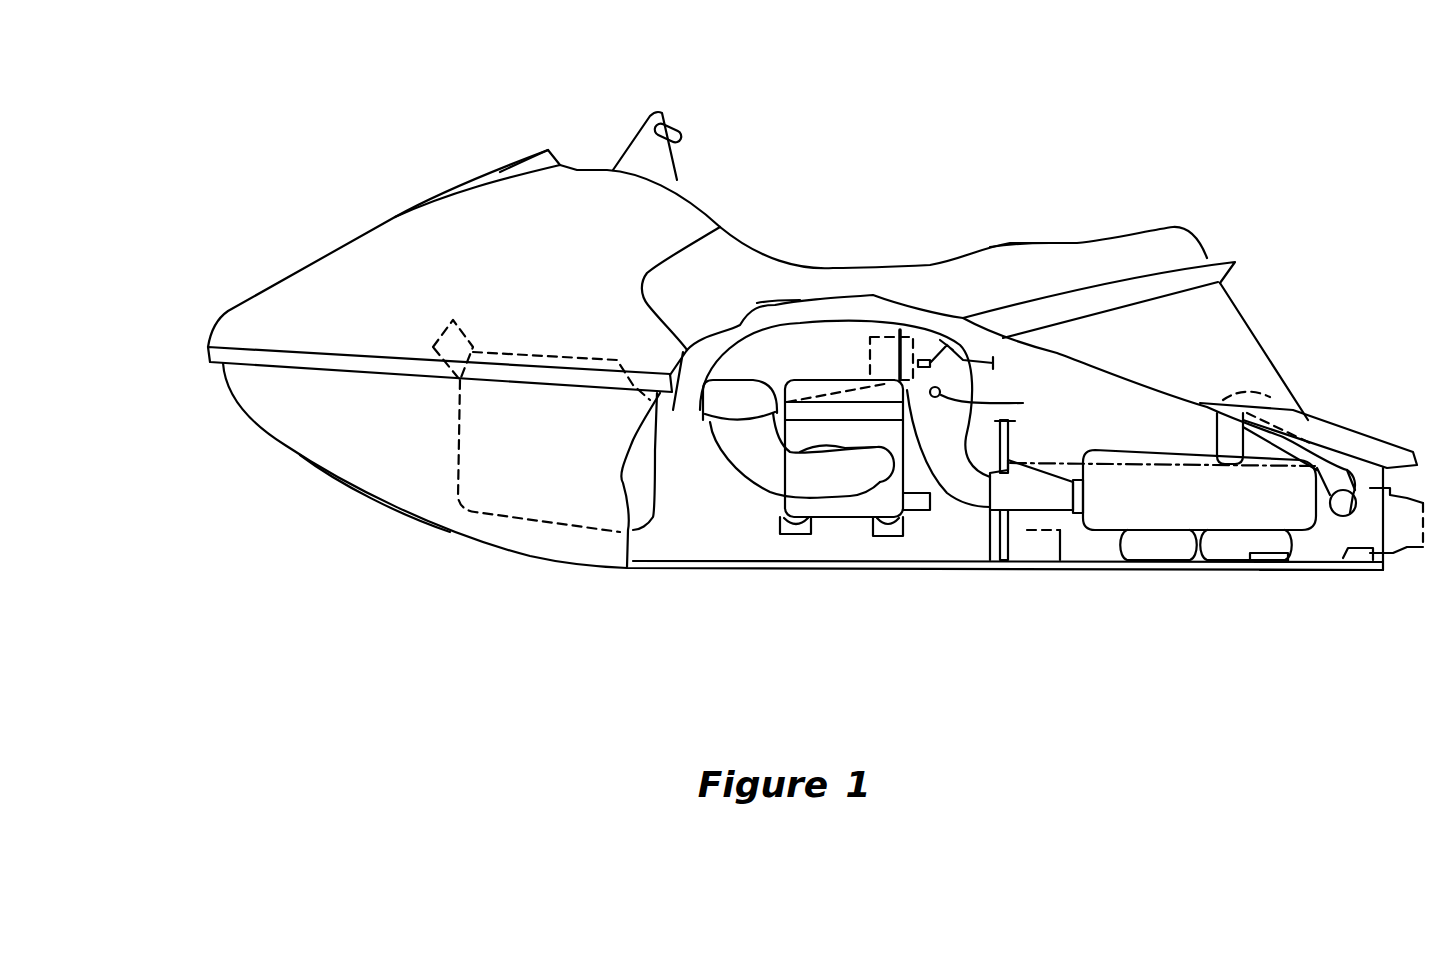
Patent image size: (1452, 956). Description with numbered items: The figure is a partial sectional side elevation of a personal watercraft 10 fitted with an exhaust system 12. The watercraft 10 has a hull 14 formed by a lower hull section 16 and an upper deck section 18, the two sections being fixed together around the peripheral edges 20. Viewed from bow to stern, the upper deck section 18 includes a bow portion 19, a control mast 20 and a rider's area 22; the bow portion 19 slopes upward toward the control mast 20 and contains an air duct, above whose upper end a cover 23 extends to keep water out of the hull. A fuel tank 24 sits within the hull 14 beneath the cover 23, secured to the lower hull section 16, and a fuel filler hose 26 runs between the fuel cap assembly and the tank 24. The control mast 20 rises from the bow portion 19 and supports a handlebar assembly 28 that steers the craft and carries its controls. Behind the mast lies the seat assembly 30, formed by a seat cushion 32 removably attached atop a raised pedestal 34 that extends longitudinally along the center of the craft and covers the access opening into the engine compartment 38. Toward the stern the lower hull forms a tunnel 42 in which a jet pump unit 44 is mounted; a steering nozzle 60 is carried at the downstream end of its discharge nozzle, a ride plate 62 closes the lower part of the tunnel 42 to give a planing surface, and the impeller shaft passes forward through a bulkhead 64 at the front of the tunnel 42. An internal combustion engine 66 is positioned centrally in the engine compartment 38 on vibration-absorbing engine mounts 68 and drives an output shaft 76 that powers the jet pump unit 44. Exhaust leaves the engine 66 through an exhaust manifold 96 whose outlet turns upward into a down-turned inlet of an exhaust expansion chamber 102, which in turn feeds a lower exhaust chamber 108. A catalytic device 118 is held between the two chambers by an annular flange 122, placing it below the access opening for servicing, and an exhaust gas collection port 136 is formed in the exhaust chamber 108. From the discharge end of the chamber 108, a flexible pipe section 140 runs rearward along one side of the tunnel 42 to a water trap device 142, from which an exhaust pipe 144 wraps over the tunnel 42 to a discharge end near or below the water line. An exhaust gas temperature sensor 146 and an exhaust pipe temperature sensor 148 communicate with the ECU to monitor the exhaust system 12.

The personal watercraft 10 is at (922, 150).
The exhaust system 12 is at (764, 470).
The hull 14 is at (248, 436).
The lower hull section 16 is at (410, 493).
The upper deck section 18 is at (313, 278).
The bow portion 19 is at (460, 227).
The control mast 20 is at (206, 352).
The rider's area 22 is at (1072, 233).
The cover 23 is at (525, 158).
The fuel tank 24 is at (660, 532).
The fuel filler hose 26 is at (468, 335).
The handlebar assembly 28 is at (672, 122).
The seat assembly 30 is at (1245, 296).
The seat cushion 32 is at (1011, 262).
The raised pedestal 34 is at (1257, 345).
The engine compartment 38 is at (706, 490).
The tunnel 42 is at (1102, 437).
The jet pump unit 44 is at (1156, 447).
The steering nozzle 60 is at (1403, 537).
The ride plate 62 is at (1295, 568).
The bulkhead 64 is at (1000, 517).
The internal combustion engine 66 is at (852, 522).
The engine mounts 68 is at (803, 527).
The output shaft 76 is at (913, 503).
The exhaust manifold 96 is at (867, 470).
The exhaust expansion chamber 102 is at (773, 350).
The lower exhaust chamber 108 is at (952, 483).
The catalytic device 118 is at (870, 362).
The annular flange 122 is at (900, 330).
The exhaust gas collection port 136 is at (1007, 395).
The flexible pipe section 140 is at (1037, 500).
The water trap device 142 is at (1165, 525).
The exhaust pipe 144 is at (1227, 443).
The exhaust gas temperature sensor 146 is at (926, 360).
The exhaust pipe temperature sensor 148 is at (990, 383).